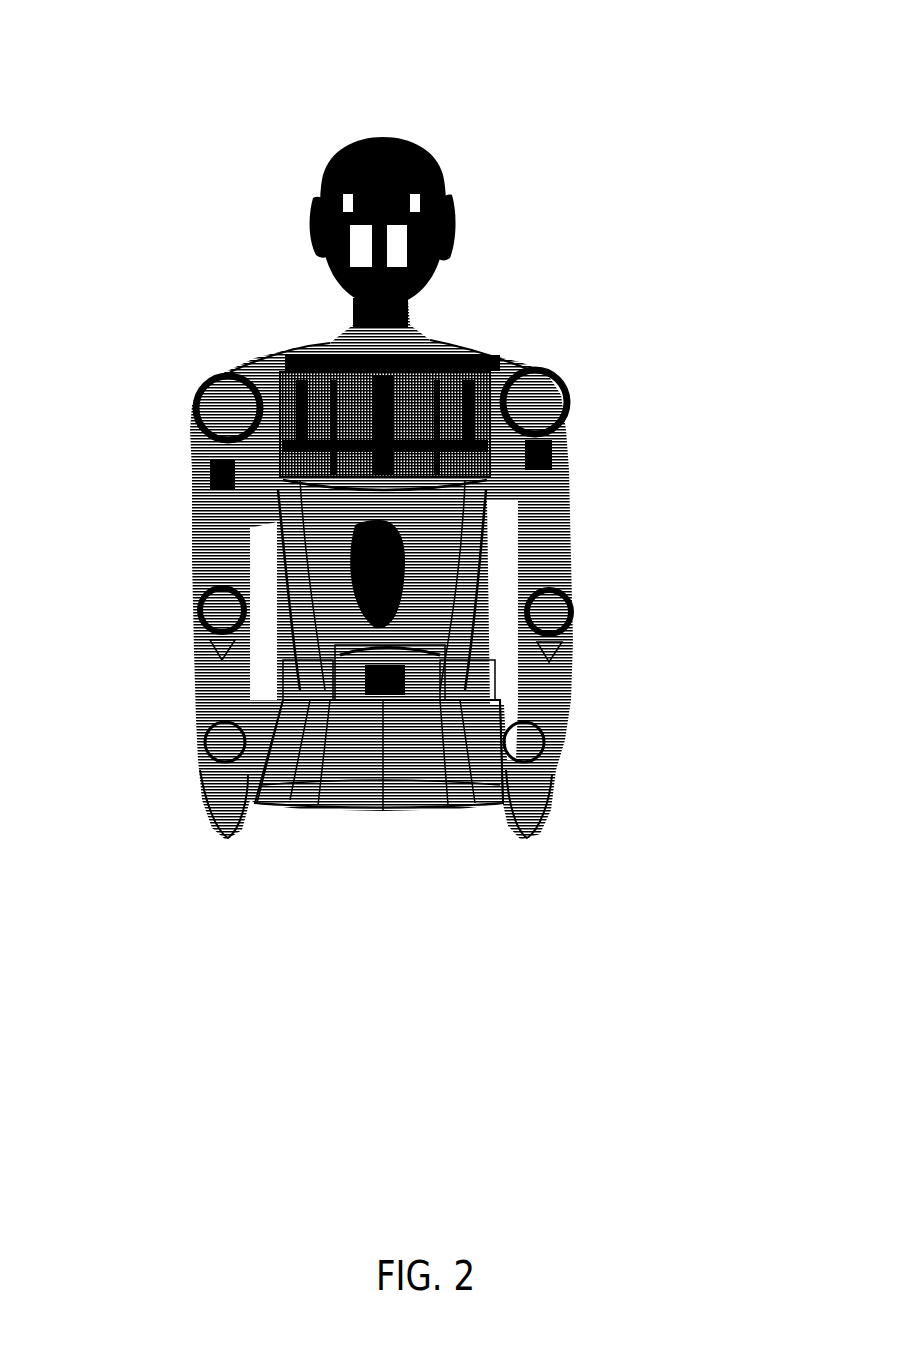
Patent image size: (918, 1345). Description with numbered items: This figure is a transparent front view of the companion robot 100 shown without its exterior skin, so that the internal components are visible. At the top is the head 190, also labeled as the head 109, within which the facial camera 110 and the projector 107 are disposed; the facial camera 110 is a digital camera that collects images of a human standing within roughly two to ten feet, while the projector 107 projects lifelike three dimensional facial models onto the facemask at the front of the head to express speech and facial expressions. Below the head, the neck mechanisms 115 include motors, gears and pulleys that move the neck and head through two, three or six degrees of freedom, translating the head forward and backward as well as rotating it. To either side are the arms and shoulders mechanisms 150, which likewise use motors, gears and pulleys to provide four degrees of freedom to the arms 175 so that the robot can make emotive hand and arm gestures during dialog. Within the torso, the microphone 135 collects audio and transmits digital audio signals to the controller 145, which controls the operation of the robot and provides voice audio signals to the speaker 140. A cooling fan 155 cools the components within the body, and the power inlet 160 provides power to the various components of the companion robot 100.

The companion robot 100 is at (720, 117).
The head 190 is at (266, 158).
The facial camera 110 is at (417, 145).
The projector 107 is at (443, 237).
The head 109 is at (360, 313).
The shoulder mechanisms 150 is at (275, 372).
The neck mechanisms 115 is at (452, 350).
The microphone 135 is at (280, 560).
The cooling fan 155 is at (490, 532).
The arms 175 is at (208, 676).
The power inlet 160 is at (293, 685).
The controller 145 is at (477, 699).
The speaker 140 is at (379, 776).